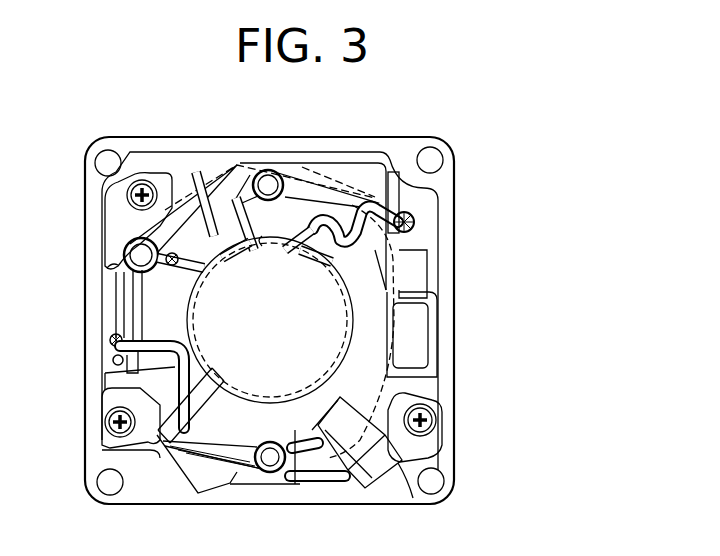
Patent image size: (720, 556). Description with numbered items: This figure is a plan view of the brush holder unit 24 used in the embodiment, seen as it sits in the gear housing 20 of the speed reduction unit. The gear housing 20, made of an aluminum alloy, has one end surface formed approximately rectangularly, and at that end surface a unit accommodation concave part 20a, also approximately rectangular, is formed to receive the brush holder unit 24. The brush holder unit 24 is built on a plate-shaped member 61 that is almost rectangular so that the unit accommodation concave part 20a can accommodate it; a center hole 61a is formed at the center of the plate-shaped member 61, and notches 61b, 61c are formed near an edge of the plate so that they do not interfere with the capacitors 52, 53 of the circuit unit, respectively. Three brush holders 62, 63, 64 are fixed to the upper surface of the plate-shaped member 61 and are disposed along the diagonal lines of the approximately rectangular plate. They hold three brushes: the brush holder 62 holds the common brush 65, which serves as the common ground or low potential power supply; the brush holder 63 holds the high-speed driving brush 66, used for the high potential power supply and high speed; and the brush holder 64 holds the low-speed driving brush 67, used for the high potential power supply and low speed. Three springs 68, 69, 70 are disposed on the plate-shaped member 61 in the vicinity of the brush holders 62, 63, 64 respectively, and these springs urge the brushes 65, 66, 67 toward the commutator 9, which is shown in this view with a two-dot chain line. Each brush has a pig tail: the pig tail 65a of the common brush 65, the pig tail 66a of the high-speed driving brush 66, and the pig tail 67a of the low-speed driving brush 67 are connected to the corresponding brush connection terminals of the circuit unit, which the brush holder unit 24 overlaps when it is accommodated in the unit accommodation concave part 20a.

The gear housing 20 is at (454, 182).
The unit accommodation concave part 20a is at (218, 158).
The brush holder unit 24 is at (106, 228).
The spring 69 is at (186, 192).
The spring 70 is at (305, 168).
The brush holder 63 is at (246, 222).
The brush holder 64 is at (352, 256).
The plate-shaped member 61 is at (378, 165).
The low-speed driving brush 67 is at (270, 320).
The pig tail 67a is at (262, 247).
The high-speed driving brush 66 is at (203, 268).
The pig tail 66a is at (205, 320).
The pig tail 65a is at (104, 376).
The common brush 65 is at (240, 382).
The brush holder 62 is at (221, 408).
The commutator 9 is at (345, 378).
The spring 68 is at (235, 477).
The capacitor 52 is at (350, 486).
The capacitor 53 is at (430, 352).
The center hole 61a is at (425, 336).
The notch 61c is at (440, 366).
The notch 61b is at (413, 498).